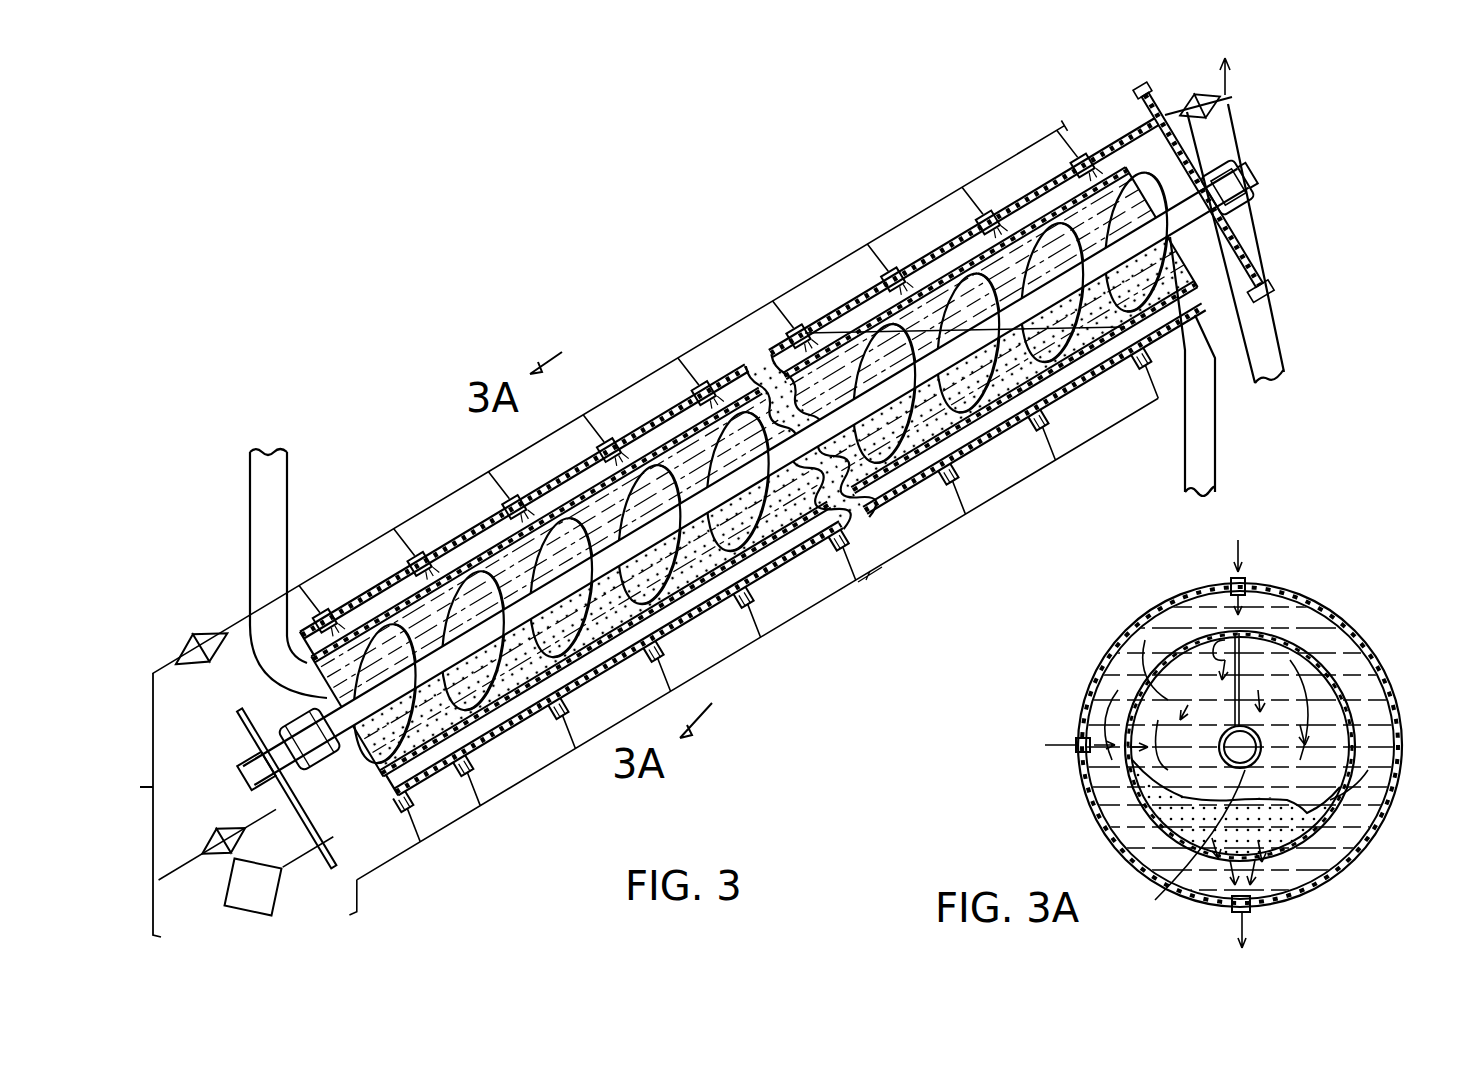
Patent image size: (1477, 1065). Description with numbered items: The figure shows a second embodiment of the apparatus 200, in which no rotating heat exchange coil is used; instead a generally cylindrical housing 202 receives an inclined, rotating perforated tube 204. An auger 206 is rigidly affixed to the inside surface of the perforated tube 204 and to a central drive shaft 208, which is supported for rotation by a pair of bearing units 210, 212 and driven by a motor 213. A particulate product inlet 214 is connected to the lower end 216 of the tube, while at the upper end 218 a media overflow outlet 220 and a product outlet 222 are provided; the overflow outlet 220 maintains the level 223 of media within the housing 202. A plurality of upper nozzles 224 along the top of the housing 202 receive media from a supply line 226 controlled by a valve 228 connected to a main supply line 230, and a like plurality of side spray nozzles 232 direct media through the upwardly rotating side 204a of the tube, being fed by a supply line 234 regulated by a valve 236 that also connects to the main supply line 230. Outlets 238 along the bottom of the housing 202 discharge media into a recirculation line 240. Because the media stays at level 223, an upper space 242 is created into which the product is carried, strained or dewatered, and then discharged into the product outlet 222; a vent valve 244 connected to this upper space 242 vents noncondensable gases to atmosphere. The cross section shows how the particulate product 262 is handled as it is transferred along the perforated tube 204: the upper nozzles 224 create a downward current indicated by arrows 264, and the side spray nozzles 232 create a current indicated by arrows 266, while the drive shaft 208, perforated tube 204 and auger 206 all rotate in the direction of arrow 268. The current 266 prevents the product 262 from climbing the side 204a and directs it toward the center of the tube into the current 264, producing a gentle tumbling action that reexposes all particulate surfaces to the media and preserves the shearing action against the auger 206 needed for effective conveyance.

In FIG. 3, the apparatus 200 is at (544, 337).
In FIG. 3, the housing 202 is at (793, 567).
In FIG. 3A, the housing 202 is at (1372, 652).
In FIG. 3, the perforated tube 204 is at (895, 543).
In FIG. 3A, the perforated tube 204 is at (1368, 715).
In FIG. 3A, the upwardly rotating side 204a is at (1110, 797).
In FIG. 3, the auger 206 is at (462, 489).
In FIG. 3A, the auger 206 is at (1328, 615).
In FIG. 3, the drive shaft 208 is at (642, 422).
In FIG. 3A, the drive shaft 208 is at (1263, 732).
In FIG. 3, the bearing unit 210 is at (343, 755).
In FIG. 3, the bearing unit 212 is at (1240, 168).
In FIG. 3, the motor 213 is at (237, 913).
In FIG. 3, the particulate product inlet 214 is at (250, 530).
In FIG. 3, the lower end 216 is at (447, 833).
In FIG. 3, the upper end 218 is at (1135, 128).
In FIG. 3, the media overflow outlet 220 is at (1185, 455).
In FIG. 3, the product outlet 222 is at (1262, 338).
In FIG. 3, the media level 223 is at (882, 328).
In FIG. 3, the upper nozzles 224 is at (330, 617).
In FIG. 3A, the upper nozzles 224 is at (1246, 586).
In FIG. 3, the supply line 226 is at (750, 310).
In FIG. 3, the valve 228 is at (203, 642).
In FIG. 3, the main supply line 230 is at (153, 786).
In FIG. 3A, the side spray nozzles 232 is at (1073, 753).
In FIG. 3, the supply line 234 is at (270, 810).
In FIG. 3, the valve 236 is at (222, 830).
In FIG. 3, the outlets 238 is at (755, 600).
In FIG. 3A, the outlets 238 is at (1252, 914).
In FIG. 3, the recirculation line 240 is at (780, 625).
In FIG. 3, the upper space 242 is at (1047, 186).
In FIG. 3, the vent valve 244 is at (1194, 94).
In FIG. 3A, the particulate product 262 is at (1362, 760).
In FIG. 3A, the arrows 264 is at (1233, 633).
In FIG. 3A, the arrows 266 is at (1113, 683).
In FIG. 3A, the arrow 268 is at (1140, 637).